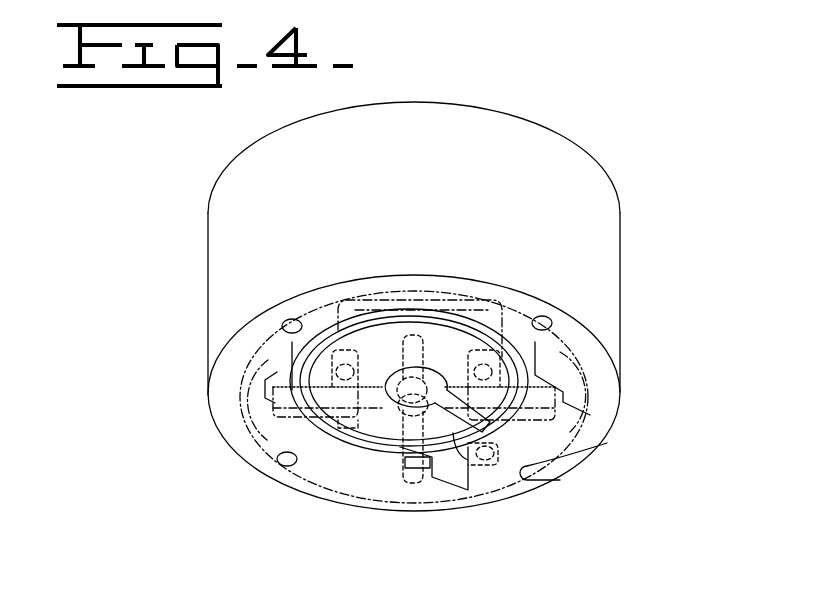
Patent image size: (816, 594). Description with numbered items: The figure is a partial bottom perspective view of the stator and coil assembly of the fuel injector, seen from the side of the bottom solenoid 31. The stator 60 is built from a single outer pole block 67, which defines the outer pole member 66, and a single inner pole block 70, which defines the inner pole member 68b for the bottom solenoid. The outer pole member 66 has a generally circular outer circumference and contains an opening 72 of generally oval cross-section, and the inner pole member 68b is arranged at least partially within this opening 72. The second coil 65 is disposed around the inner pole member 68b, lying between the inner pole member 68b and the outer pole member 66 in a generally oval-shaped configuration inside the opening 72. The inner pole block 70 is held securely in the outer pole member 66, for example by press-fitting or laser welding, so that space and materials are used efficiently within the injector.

The outer pole block 67 is at (622, 228).
The outer pole member 66 is at (600, 367).
The solenoid 31 is at (222, 438).
The second coil 65 is at (370, 453).
The stator 60 is at (356, 423).
The inner pole block 70 is at (387, 440).
The inner pole member 68b is at (440, 472).
The opening 72 is at (560, 480).